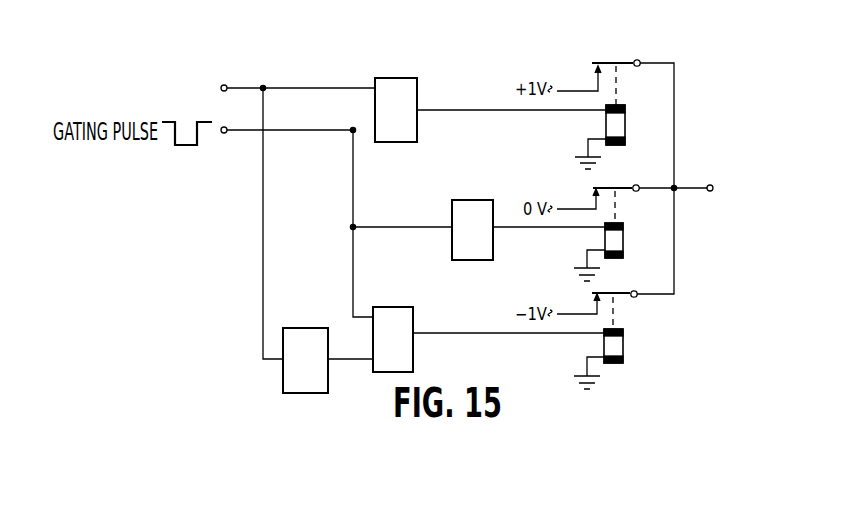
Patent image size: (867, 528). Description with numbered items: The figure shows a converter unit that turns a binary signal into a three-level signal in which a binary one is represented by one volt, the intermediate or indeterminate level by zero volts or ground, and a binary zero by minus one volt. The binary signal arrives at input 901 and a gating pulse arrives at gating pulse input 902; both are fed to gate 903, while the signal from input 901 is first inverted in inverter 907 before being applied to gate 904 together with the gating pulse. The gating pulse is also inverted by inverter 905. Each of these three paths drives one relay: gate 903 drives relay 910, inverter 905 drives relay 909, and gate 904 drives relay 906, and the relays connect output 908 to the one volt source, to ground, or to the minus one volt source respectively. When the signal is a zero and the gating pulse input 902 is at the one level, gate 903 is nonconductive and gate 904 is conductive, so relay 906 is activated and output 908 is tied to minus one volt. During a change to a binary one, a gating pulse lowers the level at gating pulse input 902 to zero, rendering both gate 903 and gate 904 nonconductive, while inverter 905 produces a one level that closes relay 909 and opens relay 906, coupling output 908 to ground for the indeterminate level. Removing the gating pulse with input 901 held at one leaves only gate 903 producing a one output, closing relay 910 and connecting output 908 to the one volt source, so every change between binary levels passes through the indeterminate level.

The input 901 is at (224, 84).
The gating pulse input 902 is at (224, 133).
The gate 903 is at (387, 78).
The gate 904 is at (378, 307).
The inverter 905 is at (460, 200).
The relay 906 is at (623, 345).
The inverter 907 is at (293, 328).
The output 908 is at (710, 191).
The relay 909 is at (623, 242).
The relay 910 is at (625, 127).